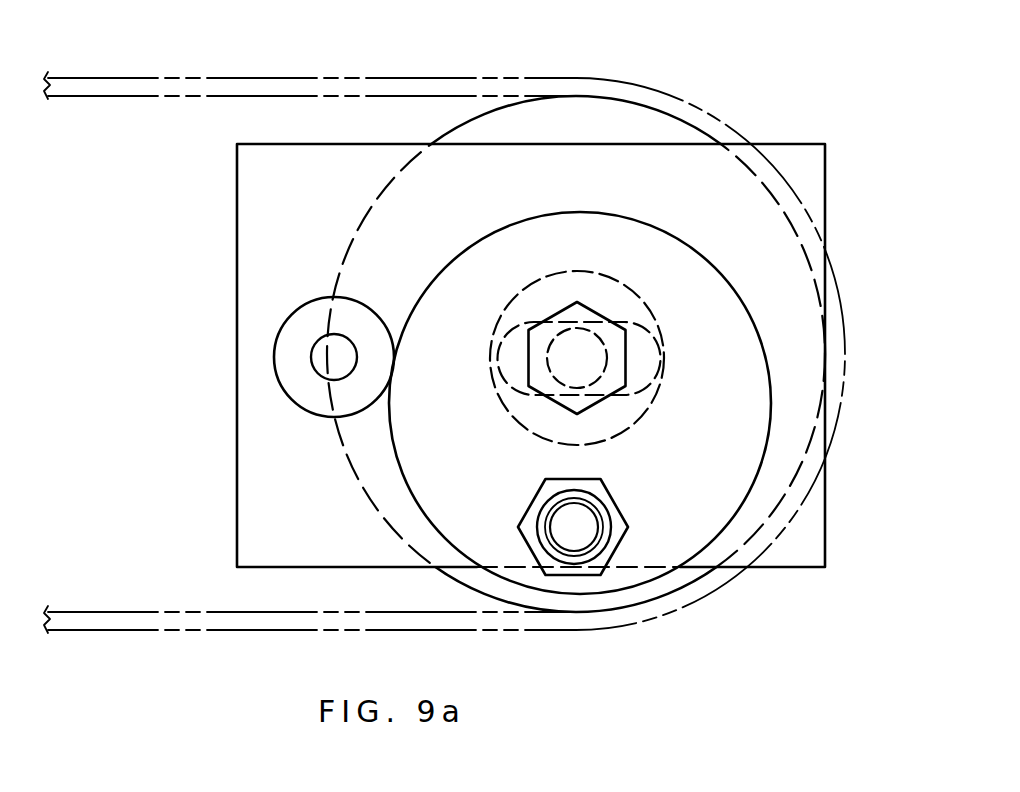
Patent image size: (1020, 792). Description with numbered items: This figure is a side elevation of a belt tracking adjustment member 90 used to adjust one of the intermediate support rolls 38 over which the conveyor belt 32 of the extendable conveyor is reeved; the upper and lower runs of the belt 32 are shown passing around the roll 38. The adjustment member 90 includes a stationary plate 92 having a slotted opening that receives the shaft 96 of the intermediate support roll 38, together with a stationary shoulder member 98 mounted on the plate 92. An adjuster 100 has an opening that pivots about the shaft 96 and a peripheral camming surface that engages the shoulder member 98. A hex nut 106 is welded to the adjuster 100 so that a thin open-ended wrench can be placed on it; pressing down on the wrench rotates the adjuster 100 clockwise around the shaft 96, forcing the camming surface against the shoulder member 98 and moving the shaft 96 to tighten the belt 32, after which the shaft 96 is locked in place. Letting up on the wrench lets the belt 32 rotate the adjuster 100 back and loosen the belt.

The conveyor belt 32 is at (350, 80).
The intermediate support roll 38 is at (517, 103).
The belt tracking adjustment member 90 is at (537, 354).
The stationary plate 92 is at (800, 568).
The shaft 96 is at (625, 362).
The shoulder member 98 is at (283, 388).
The adjuster 100 is at (593, 212).
The hex nut 106 is at (592, 576).